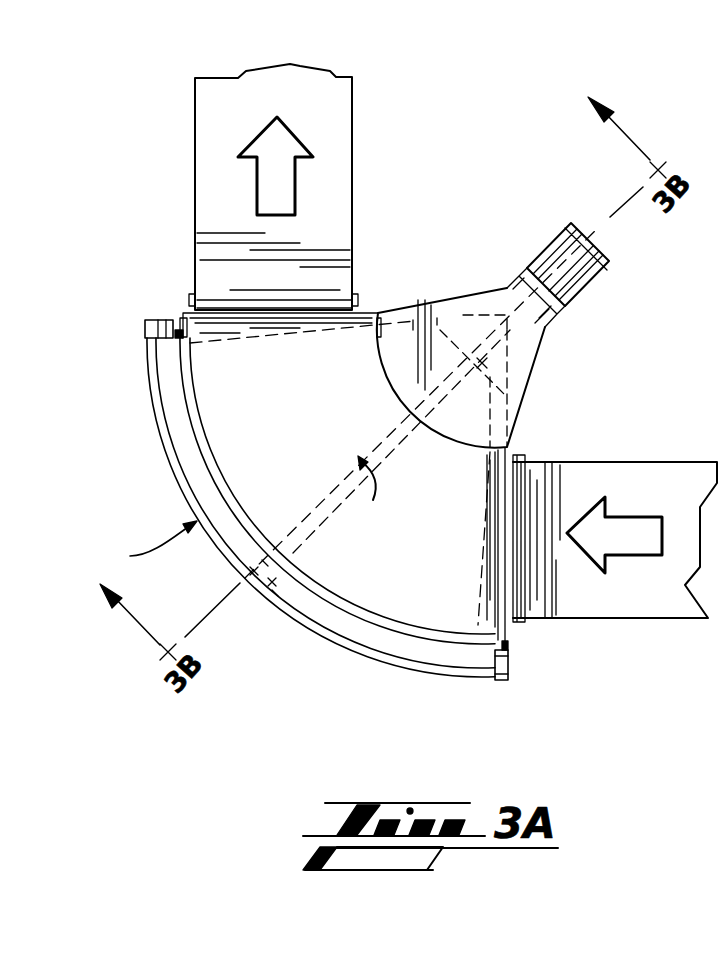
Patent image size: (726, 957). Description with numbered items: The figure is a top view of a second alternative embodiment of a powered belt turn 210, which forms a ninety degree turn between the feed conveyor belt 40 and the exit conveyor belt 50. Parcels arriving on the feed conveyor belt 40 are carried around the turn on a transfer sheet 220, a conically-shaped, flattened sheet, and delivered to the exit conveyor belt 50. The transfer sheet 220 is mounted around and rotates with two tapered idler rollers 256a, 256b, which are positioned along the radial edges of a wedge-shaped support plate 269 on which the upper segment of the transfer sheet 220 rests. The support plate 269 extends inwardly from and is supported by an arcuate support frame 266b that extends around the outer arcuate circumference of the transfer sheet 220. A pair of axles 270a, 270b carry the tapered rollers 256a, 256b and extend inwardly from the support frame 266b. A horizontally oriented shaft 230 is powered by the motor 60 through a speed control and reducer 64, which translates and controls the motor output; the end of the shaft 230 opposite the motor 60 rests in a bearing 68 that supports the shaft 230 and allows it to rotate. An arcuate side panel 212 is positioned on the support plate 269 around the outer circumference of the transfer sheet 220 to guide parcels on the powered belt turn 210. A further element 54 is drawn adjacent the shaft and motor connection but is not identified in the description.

The feed conveyor belt 40 is at (668, 478).
The exit conveyor belt 50 is at (342, 150).
The diverter body 54 is at (533, 342).
The motor 60 is at (560, 257).
The speed control and reducer 64 is at (507, 282).
The bearing 68 is at (262, 585).
The powered belt turn 210 is at (137, 541).
The side panel 212 is at (176, 352).
The transfer sheet 220 is at (345, 440).
The shaft 230 is at (373, 450).
The tapered idler roller 256a is at (178, 328).
The tapered idler roller 256b is at (505, 628).
The arcuate support frame 266b is at (330, 622).
The support plate 269 is at (178, 398).
The axle 270a is at (182, 336).
The axle 270b is at (497, 640).